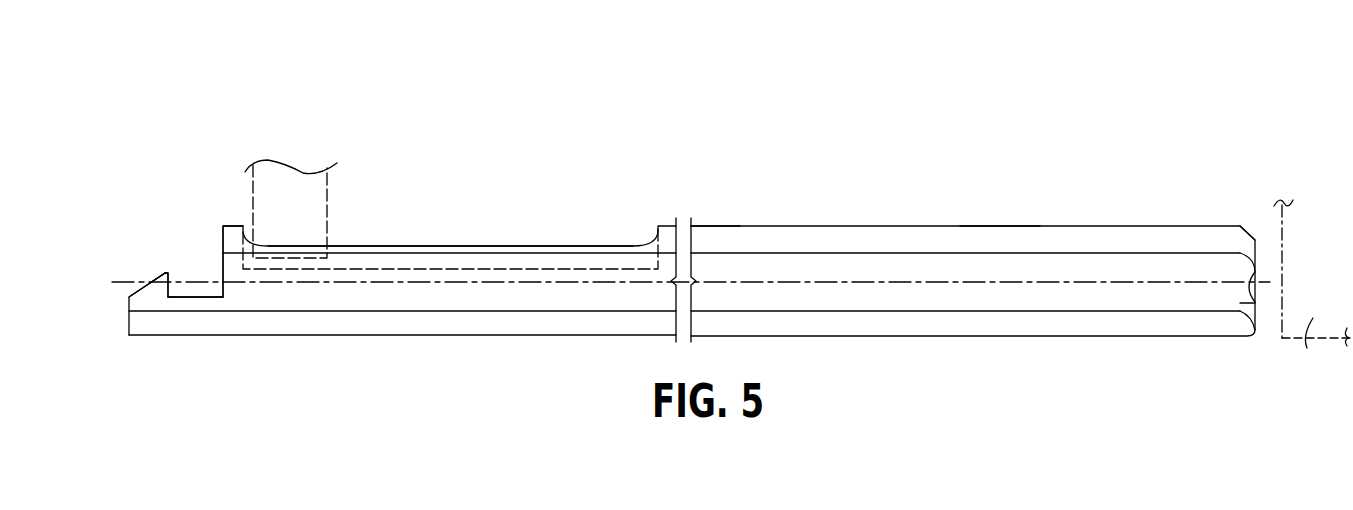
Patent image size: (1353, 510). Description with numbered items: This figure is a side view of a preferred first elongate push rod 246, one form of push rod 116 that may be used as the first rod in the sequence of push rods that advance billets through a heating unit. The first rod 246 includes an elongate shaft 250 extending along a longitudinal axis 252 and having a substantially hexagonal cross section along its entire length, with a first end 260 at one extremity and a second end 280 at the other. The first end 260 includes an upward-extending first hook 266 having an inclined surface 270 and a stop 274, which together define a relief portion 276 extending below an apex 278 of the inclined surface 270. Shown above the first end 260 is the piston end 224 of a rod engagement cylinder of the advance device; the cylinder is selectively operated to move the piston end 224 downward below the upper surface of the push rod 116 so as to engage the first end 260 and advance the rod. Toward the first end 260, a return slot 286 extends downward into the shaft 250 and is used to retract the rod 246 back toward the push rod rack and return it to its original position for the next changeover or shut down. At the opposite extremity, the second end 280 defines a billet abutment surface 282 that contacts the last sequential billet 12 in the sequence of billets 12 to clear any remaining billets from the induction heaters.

The billet 12 is at (1312, 313).
The push rod 116 is at (973, 232).
The piston end 224 is at (347, 209).
The first elongate push rod 246 is at (761, 187).
The elongate shaft 250 is at (1025, 194).
The longitudinal axis 252 is at (691, 343).
The first end 260 is at (383, 189).
The first hook 266 is at (109, 219).
The inclined surface 270 is at (113, 248).
The stop 274 is at (242, 315).
The relief portion 276 is at (209, 207).
The apex 278 is at (176, 228).
The second end 280 is at (1296, 183).
The billet abutment surface 282 is at (1191, 345).
The return slot 286 is at (450, 213).